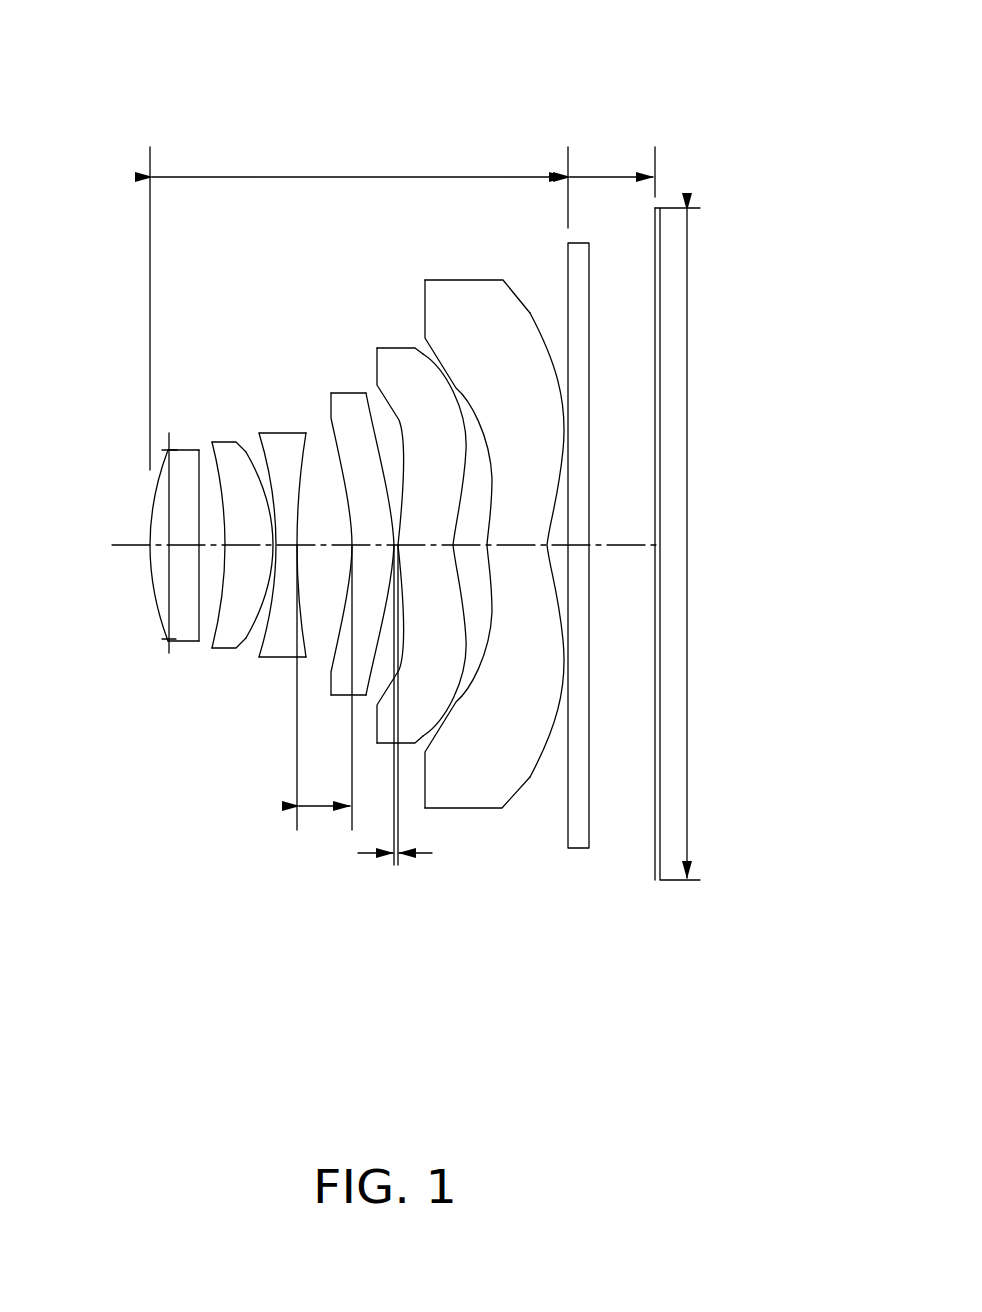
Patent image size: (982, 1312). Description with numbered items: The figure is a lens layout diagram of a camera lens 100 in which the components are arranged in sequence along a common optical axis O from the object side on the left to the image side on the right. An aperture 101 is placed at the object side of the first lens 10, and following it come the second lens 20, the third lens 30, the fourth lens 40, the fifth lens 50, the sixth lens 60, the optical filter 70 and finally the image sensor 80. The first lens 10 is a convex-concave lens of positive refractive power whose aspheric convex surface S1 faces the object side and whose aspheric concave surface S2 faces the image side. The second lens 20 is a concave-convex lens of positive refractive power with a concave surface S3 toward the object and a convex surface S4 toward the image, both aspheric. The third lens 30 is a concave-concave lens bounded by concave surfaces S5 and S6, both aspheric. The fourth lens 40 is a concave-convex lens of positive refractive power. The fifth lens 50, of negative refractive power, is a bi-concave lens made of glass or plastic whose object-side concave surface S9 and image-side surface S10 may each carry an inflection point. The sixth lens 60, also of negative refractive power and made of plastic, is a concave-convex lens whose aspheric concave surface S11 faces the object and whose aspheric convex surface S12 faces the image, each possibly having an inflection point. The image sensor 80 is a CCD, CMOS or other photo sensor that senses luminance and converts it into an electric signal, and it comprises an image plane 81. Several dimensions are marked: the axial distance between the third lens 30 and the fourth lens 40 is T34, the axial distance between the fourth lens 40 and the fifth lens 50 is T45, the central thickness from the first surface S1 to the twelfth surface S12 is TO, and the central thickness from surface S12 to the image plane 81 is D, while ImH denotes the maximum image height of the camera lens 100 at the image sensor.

The camera lens 100 is at (410, 45).
The aperture 101 is at (168, 450).
The first lens 10 is at (183, 452).
The second lens 20 is at (228, 448).
The third lens 30 is at (287, 443).
The fourth lens 40 is at (350, 408).
The fifth lens 50 is at (398, 360).
The sixth lens 60 is at (473, 290).
The optical filter 70 is at (580, 272).
The image sensor 80 is at (657, 698).
The image plane 81 is at (653, 835).
The convex surface S1 is at (155, 593).
The concave surface S2 is at (190, 632).
The concave surface S3 is at (213, 627).
The convex surface S4 is at (248, 452).
The concave surface S5 is at (268, 615).
The concave surface S6 is at (306, 445).
The concave surface S9 is at (404, 440).
The concave surface S10 is at (453, 550).
The concave surface S11 is at (450, 380).
The convex surface S12 is at (530, 777).
The optical axis O is at (374, 544).
The central thickness T0 TO is at (359, 304).
The central thickness D is at (612, 168).
The axial distance CT34 T34 is at (324, 704).
The axial distance CT45 T45 is at (420, 707).
The maximum image height ImH is at (719, 544).